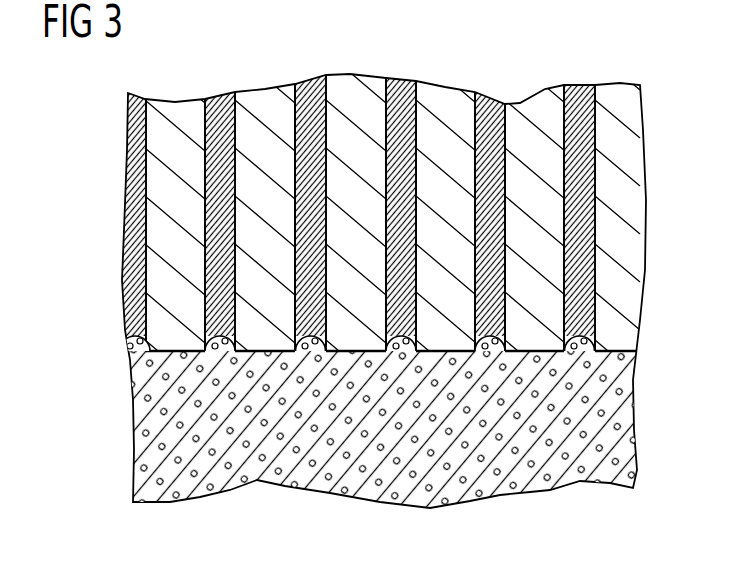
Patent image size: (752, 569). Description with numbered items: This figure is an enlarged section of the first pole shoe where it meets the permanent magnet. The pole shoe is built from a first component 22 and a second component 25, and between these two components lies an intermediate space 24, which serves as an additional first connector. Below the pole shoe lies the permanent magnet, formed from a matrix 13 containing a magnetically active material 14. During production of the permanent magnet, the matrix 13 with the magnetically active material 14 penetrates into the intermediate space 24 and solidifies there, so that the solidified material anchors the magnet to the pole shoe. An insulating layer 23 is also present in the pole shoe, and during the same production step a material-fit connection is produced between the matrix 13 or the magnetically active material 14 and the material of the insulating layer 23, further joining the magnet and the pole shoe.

The matrix 13 is at (575, 352).
The magnetically active material 14 is at (590, 369).
The first component 22 is at (543, 122).
The insulating layer 23 is at (578, 86).
The intermediate space 24 is at (600, 342).
The second component 25 is at (607, 123).